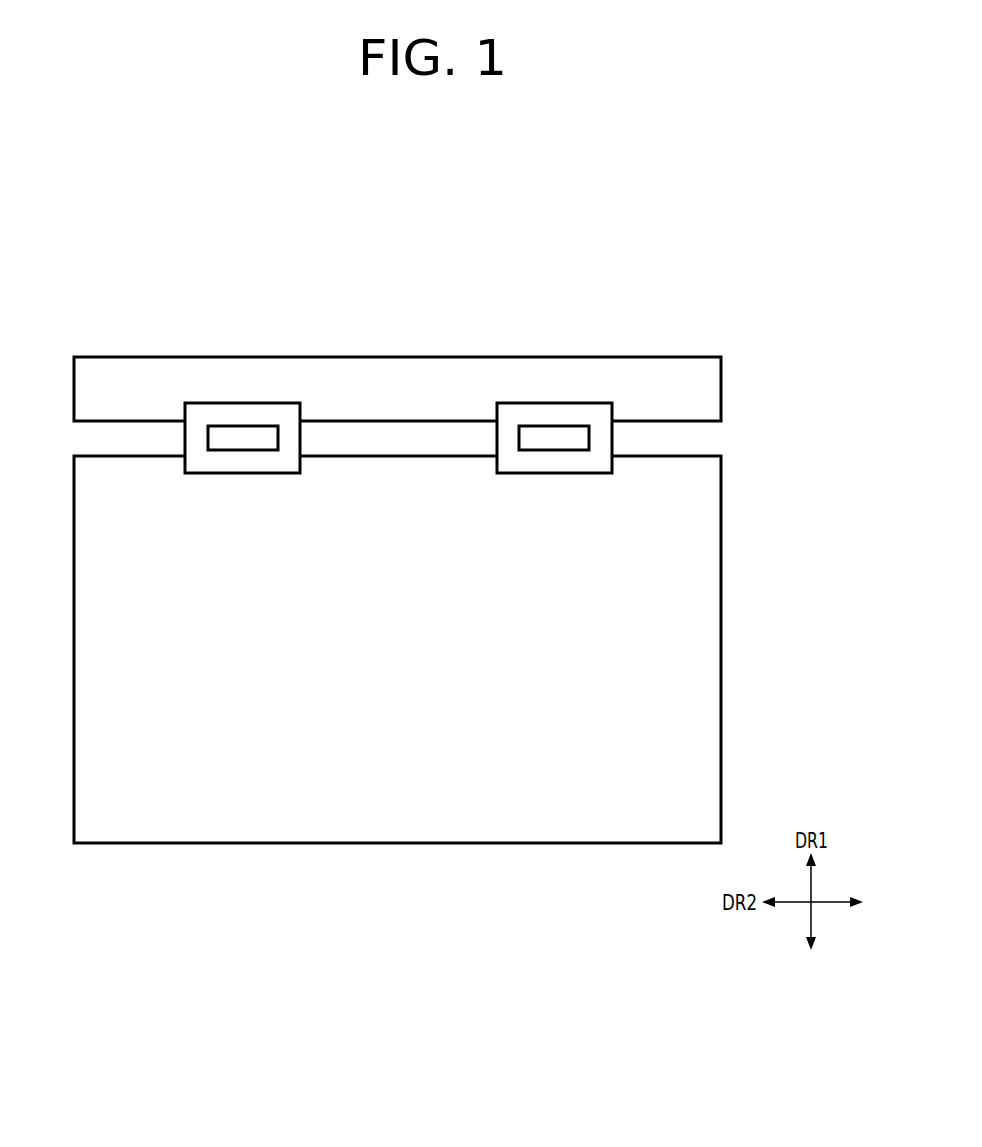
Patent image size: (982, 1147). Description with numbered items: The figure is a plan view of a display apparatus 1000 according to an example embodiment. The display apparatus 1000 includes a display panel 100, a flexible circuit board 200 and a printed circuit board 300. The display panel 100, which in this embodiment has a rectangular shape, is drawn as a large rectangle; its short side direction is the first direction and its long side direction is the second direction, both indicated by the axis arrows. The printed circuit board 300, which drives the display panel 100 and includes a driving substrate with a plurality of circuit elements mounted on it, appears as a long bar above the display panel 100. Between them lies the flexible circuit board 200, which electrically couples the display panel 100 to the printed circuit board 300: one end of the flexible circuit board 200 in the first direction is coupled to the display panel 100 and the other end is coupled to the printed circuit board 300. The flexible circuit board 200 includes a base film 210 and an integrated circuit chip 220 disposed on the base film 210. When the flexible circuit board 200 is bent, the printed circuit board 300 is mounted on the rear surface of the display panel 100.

The display apparatus 1000 is at (704, 302).
The printed circuit board 300 is at (611, 357).
The display panel 100 is at (722, 583).
The flexible circuit board 200 is at (406, 493).
The base film 210 is at (593, 465).
The integrated circuit chip 220 is at (398, 483).